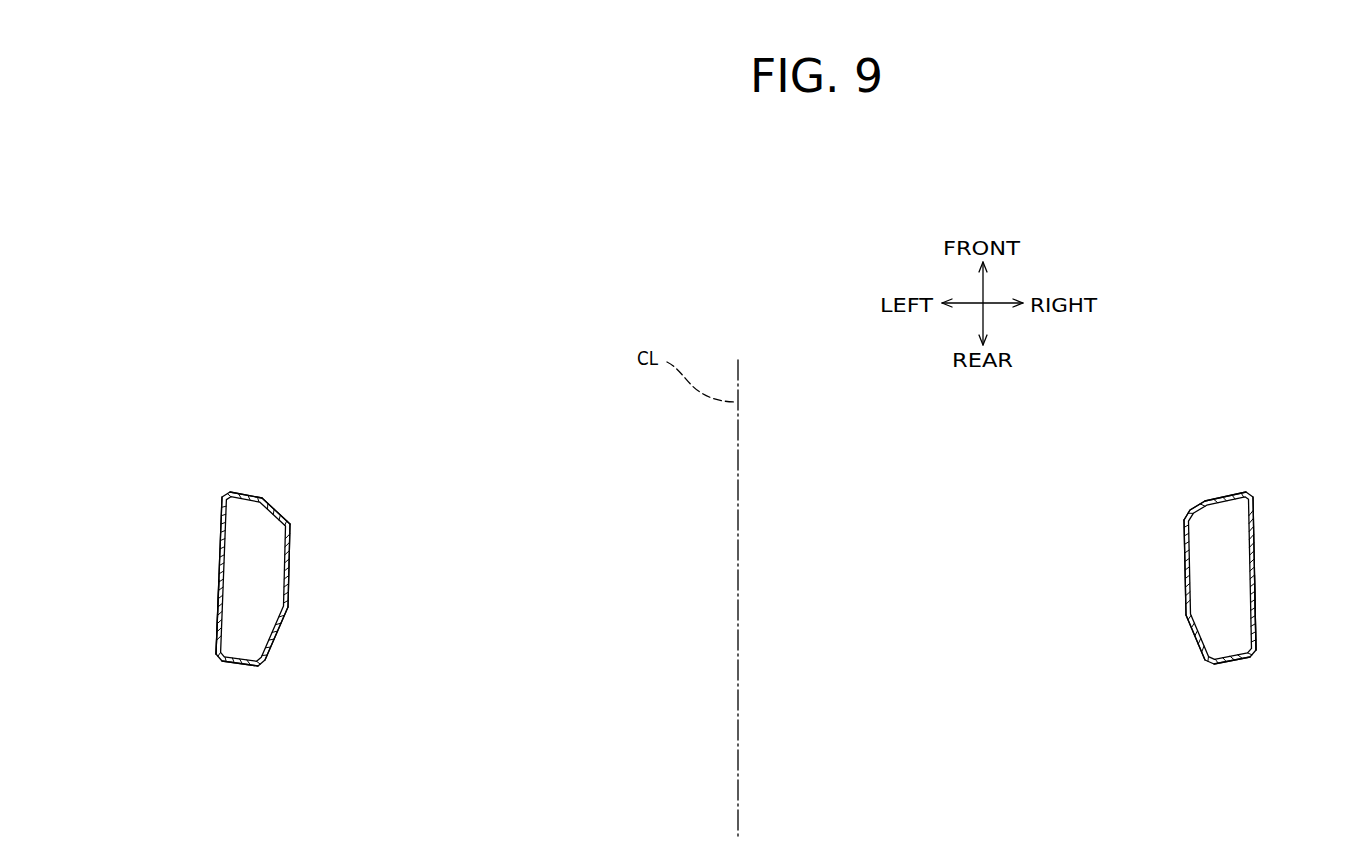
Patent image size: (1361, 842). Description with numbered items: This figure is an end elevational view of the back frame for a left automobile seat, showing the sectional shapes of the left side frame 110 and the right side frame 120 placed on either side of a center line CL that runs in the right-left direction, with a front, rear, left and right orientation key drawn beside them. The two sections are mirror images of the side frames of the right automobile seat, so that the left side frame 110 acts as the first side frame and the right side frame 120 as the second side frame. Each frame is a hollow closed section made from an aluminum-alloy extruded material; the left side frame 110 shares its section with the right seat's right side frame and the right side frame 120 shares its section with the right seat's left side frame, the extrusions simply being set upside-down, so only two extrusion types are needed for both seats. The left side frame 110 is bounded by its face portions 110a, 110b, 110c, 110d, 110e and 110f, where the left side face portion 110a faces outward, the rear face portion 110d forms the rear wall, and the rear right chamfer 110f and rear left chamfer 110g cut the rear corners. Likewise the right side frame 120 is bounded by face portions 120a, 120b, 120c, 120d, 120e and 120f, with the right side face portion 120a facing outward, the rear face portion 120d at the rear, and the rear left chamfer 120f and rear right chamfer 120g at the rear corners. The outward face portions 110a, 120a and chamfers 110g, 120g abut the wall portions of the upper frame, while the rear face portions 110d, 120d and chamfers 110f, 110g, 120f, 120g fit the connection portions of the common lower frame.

The left side frame 110 is at (222, 520).
The left side face portion 110a is at (218, 573).
The face portion 110b is at (288, 560).
The face portion 110c is at (252, 492).
The rear face portion 110d is at (240, 667).
The face portion 110e is at (284, 515).
The rear right chamfer 110f is at (282, 638).
The rear left chamfer 110g is at (215, 627).
The right side frame 120 is at (1257, 522).
The right side face portion 120a is at (1258, 577).
The face portion 120b is at (1183, 547).
The face portion 120c is at (1218, 492).
The rear face portion 120d is at (1235, 665).
The face portion 120e is at (1198, 505).
The rear left chamfer 120f is at (1203, 648).
The rear right chamfer 120g is at (1258, 633).